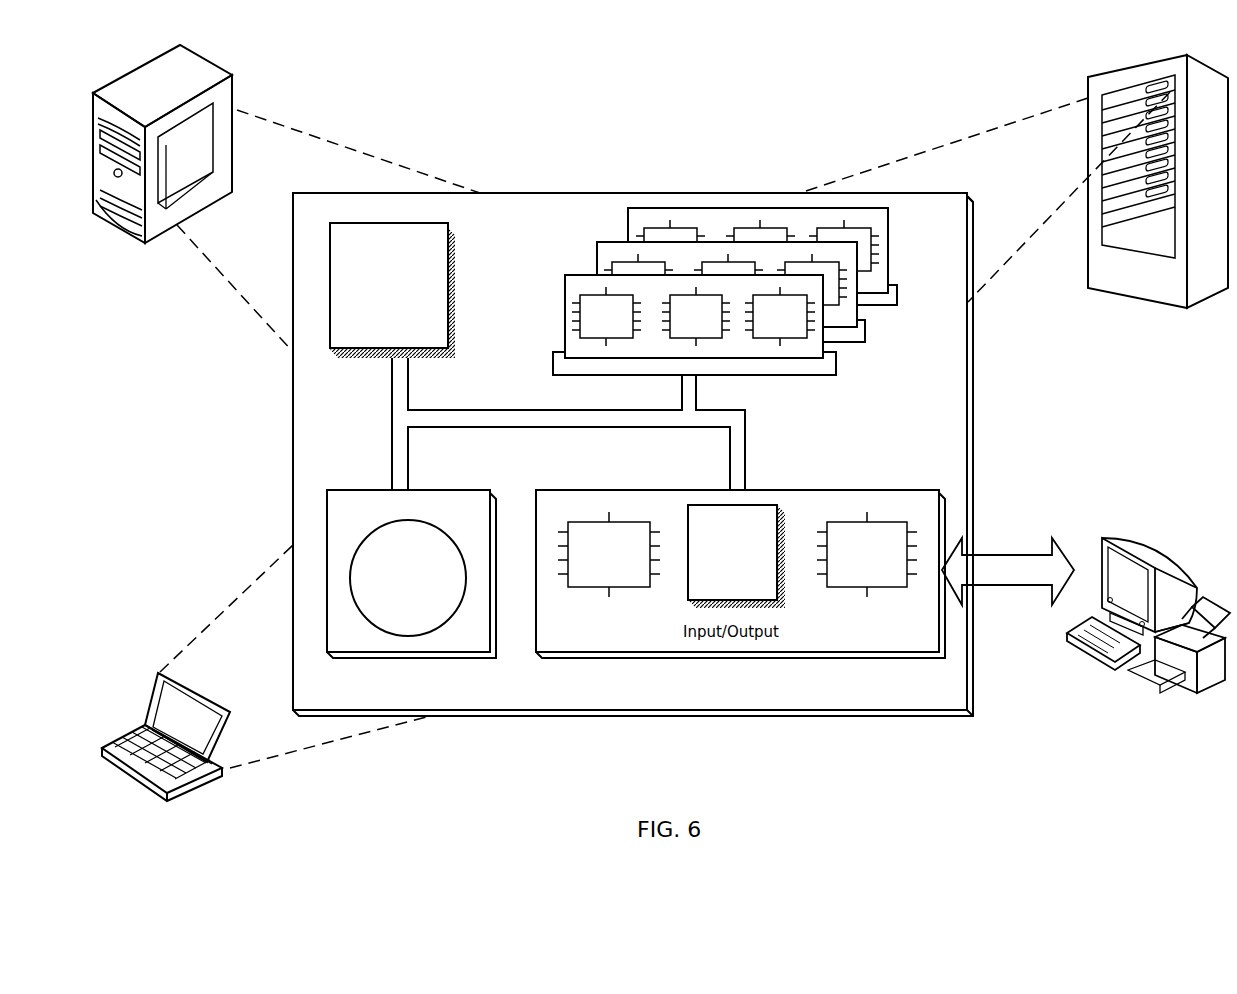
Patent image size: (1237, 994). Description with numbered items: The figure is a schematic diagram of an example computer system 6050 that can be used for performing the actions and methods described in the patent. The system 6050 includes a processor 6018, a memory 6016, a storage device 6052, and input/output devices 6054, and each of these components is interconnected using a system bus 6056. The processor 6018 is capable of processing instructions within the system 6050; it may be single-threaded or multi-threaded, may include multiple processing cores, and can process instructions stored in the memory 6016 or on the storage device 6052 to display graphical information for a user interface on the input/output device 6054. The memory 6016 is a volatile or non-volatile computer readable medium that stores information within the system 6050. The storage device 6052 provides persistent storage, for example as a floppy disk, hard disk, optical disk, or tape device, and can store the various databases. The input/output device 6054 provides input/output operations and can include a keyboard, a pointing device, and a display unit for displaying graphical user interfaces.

The computer system 6050 is at (469, 61).
The processor 6018 is at (392, 290).
The memory 6016 is at (897, 345).
The system bus 6056 is at (571, 430).
The storage device 6052 is at (411, 574).
The input/output devices 6054 is at (1098, 540).